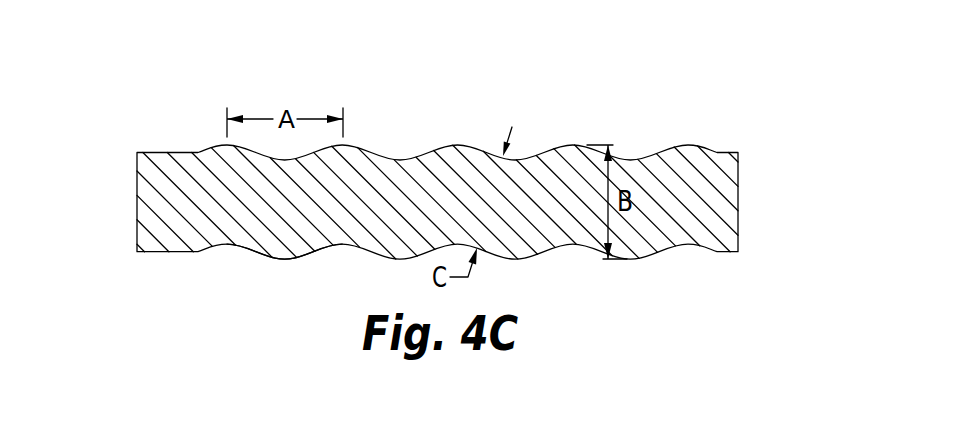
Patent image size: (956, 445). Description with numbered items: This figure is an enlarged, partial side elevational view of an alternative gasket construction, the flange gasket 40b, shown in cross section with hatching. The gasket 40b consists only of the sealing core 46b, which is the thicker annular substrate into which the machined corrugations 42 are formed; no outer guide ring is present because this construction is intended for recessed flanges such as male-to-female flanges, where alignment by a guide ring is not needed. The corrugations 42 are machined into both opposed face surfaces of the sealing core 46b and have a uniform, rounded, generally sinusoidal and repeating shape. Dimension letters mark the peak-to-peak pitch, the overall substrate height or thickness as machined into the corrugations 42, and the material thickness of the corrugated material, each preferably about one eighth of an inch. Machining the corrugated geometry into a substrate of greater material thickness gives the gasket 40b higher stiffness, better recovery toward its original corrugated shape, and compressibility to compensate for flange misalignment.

The flange gasket 40b is at (548, 106).
The sealing core 46b is at (393, 193).
The machined corrugations 42 is at (288, 258).